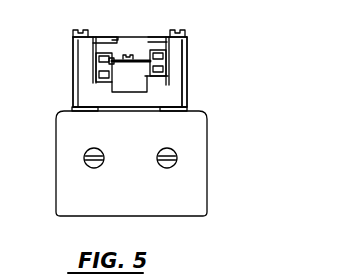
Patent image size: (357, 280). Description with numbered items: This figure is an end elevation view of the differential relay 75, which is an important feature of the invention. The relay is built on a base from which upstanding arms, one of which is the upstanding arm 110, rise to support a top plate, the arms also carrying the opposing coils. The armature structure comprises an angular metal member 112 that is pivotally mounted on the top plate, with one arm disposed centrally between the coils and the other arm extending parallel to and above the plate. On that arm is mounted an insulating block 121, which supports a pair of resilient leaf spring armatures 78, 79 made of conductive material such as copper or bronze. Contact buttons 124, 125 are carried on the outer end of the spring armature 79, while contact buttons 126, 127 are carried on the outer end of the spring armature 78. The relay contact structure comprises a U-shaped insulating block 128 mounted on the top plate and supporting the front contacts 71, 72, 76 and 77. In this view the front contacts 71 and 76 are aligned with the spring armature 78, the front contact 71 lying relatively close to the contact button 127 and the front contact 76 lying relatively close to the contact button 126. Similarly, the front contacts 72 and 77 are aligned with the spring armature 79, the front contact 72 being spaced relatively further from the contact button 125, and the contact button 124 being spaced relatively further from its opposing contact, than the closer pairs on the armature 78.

The upstanding arm 110 is at (199, 183).
The differential relay 75 is at (217, 142).
The front contact 72 is at (74, 89).
The contact button 124 is at (95, 52).
The leaf spring armature 79 is at (95, 62).
The contact button 125 is at (96, 76).
The front contact 77 is at (112, 41).
The insulating block 121 is at (138, 60).
The angular metal member 112 is at (136, 92).
The U-shaped insulating block 128 is at (90, 109).
The contact button 126 is at (185, 37).
The front contact 76 is at (156, 38).
The leaf spring armature 78 is at (168, 52).
The contact button 127 is at (168, 62).
The front contact 71 is at (185, 83).